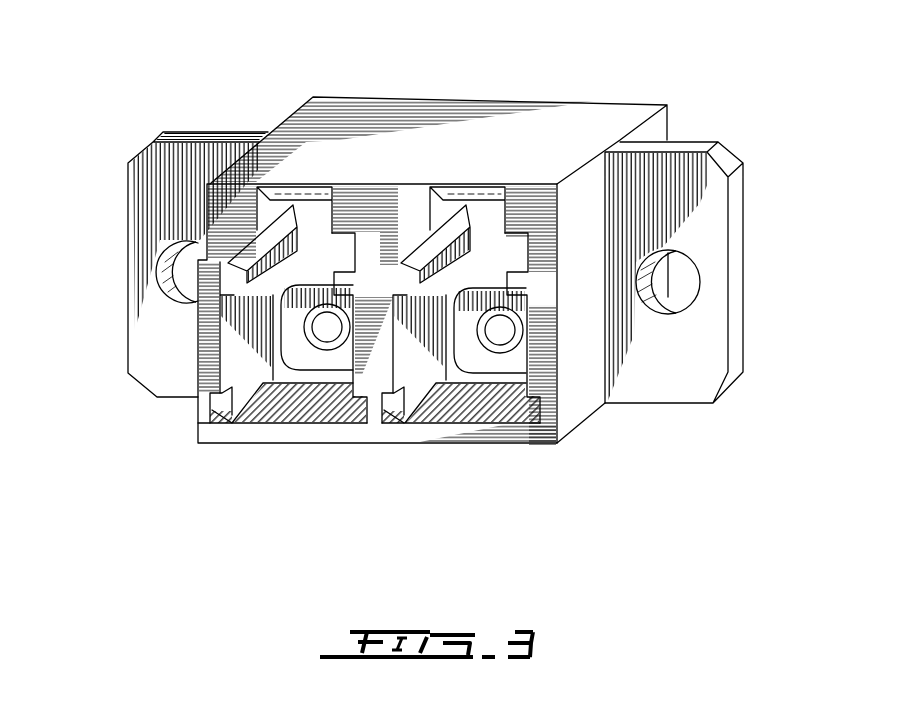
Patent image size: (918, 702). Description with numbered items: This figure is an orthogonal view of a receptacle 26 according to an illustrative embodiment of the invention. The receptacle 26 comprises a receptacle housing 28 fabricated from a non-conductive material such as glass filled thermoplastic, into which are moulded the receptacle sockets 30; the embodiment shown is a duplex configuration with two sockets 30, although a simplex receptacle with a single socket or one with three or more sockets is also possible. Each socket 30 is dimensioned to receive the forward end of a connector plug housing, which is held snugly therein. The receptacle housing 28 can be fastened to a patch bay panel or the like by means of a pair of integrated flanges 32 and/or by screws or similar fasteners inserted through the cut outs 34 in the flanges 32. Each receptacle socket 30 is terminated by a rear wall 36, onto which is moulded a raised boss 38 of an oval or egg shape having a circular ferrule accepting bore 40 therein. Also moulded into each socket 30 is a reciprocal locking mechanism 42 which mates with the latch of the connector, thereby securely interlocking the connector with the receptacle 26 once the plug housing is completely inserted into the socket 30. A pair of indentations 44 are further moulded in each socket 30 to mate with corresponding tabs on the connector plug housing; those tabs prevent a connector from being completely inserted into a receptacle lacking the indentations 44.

The receptacle 26 is at (540, 76).
The receptacle housing 28 is at (440, 125).
The receptacle socket 30 is at (243, 335).
The integrated flange 32 is at (153, 200).
The cut out 34 is at (175, 290).
The rear wall 36 is at (313, 215).
The raised boss 38 is at (473, 350).
The ferrule accepting bore 40 is at (327, 325).
The reciprocal locking mechanism 42 is at (320, 224).
The indentation 44 is at (365, 405).